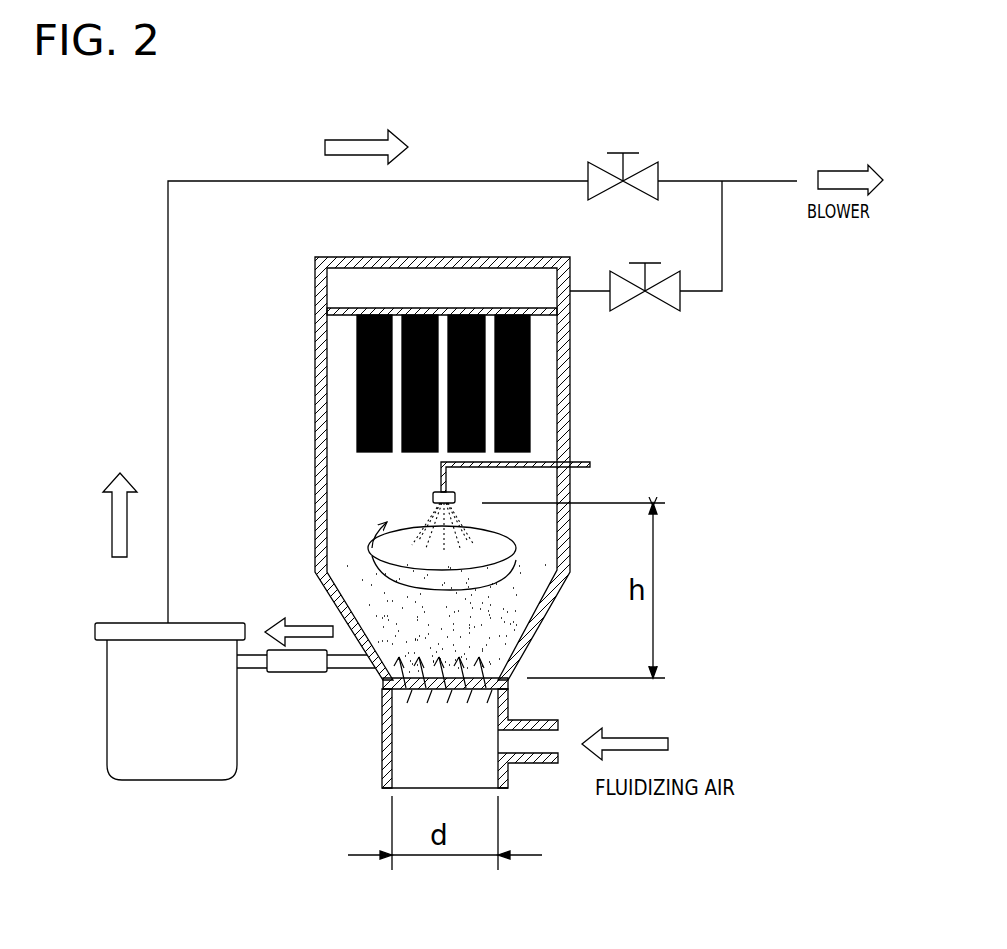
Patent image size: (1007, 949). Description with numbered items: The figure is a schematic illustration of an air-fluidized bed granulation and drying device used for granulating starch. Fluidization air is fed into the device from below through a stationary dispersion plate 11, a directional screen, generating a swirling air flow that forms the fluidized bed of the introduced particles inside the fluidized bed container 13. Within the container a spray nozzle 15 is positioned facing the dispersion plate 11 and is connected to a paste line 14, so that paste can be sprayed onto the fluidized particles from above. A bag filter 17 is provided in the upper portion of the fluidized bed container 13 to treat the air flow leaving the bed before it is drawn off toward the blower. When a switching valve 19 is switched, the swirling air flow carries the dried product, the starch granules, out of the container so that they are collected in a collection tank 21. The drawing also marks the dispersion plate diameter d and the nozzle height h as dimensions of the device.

The dispersion plate 11 is at (440, 688).
The fluidized bed container 13 is at (570, 400).
The paste line 14 is at (578, 462).
The spray nozzle 15 is at (433, 493).
The bag filter 17 is at (530, 357).
The switching valve 19 is at (288, 675).
The collection tank 21 is at (122, 693).